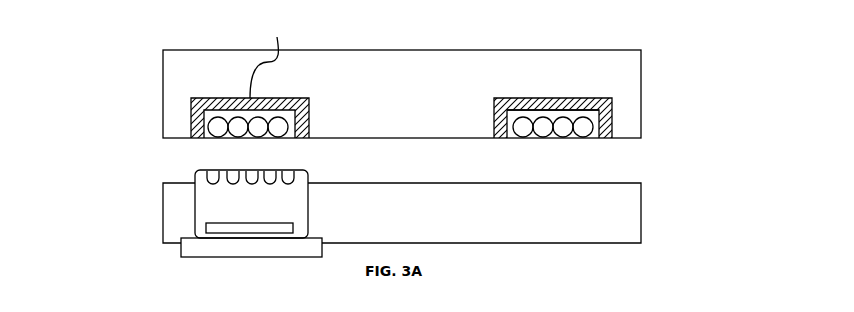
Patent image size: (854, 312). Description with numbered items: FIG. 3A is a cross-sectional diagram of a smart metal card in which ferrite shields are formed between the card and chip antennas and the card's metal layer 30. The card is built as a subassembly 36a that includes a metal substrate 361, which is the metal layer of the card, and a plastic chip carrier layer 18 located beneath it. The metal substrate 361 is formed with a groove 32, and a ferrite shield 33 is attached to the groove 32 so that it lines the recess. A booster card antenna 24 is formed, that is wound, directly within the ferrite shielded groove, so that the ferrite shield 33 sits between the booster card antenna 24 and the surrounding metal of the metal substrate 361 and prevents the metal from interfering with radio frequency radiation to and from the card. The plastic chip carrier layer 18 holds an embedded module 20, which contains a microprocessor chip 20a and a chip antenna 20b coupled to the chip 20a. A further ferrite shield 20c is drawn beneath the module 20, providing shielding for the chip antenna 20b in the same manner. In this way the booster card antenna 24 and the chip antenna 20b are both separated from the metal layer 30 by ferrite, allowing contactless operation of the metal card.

The subassembly 36a is at (640, 33).
The metal layer 30 is at (641, 97).
The metal substrate 361 is at (163, 97).
The ferrite shield 33 is at (535, 98).
The groove 32 is at (556, 98).
The booster card antenna 24 is at (248, 143).
The plastic chip carrier layer 18 is at (641, 222).
The module 20 is at (308, 218).
The microprocessor chip 20a is at (235, 220).
The chip antenna 20b is at (213, 190).
The ferrite shield of chip module 20c is at (190, 252).